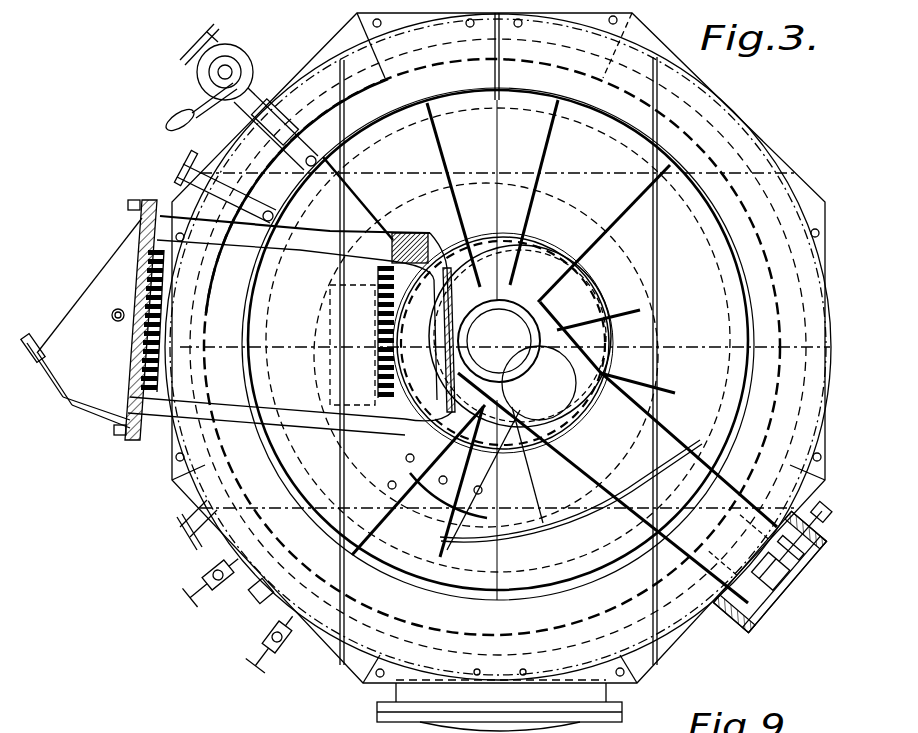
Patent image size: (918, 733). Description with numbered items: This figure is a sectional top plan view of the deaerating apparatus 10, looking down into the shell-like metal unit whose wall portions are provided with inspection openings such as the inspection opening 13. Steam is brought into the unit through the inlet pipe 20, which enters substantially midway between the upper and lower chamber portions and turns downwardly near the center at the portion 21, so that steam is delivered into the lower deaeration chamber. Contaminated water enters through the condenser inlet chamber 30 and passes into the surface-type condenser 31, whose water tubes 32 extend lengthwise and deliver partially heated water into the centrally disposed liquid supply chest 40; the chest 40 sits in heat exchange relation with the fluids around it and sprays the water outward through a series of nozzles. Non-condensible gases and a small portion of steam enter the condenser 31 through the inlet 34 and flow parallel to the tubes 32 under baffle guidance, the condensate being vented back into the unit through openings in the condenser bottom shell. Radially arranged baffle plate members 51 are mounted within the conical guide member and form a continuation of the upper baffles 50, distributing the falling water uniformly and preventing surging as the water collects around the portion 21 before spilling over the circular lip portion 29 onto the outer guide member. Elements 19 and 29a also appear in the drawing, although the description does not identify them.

The deaerating apparatus 10 is at (585, 556).
The inspection opening 13 is at (376, 533).
The rotor 19 is at (492, 183).
The steam inlet pipe 20 is at (800, 537).
The downturned portion of steam inlet tube 21 is at (528, 328).
The circular lip portion 29 is at (556, 252).
The arm 29a is at (645, 256).
The condenser inlet chamber 30 is at (68, 338).
The condenser 31 is at (297, 322).
The water tubes 32 is at (394, 230).
The condenser inlet 34 is at (335, 355).
The liquid supply chest 40 is at (450, 378).
The upper baffles 50 is at (634, 202).
The baffle plate members 51 is at (560, 300).